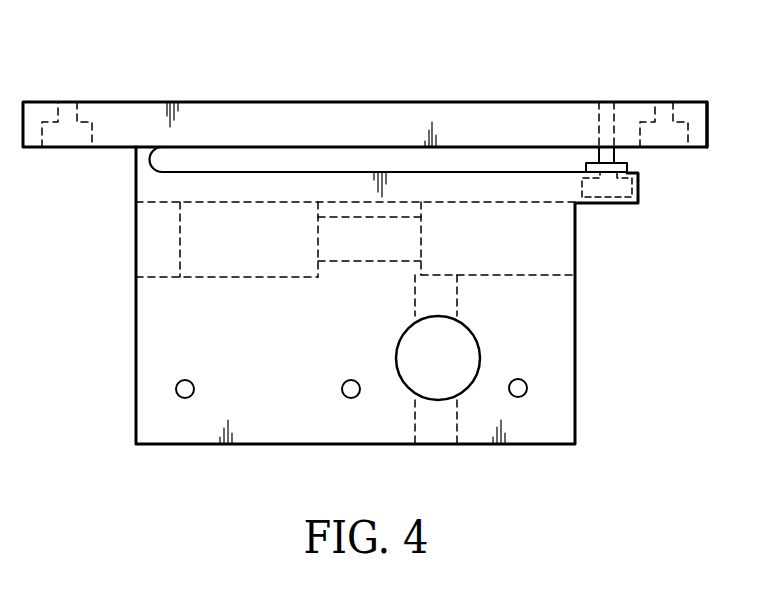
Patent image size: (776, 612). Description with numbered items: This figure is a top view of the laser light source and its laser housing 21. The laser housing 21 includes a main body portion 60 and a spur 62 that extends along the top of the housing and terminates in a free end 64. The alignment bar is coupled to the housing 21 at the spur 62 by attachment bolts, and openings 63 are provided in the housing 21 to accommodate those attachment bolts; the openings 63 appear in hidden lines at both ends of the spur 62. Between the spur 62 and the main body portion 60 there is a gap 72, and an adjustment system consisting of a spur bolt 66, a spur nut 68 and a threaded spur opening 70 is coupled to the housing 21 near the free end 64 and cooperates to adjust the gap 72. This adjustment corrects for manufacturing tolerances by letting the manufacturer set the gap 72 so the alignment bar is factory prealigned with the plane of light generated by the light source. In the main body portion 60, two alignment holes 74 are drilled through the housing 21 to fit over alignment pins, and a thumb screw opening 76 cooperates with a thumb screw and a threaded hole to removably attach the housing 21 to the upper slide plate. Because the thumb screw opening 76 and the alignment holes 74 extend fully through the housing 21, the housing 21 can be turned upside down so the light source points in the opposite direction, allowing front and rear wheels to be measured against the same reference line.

The laser housing 21 is at (393, 234).
The main body portion 60 is at (233, 330).
The spur 62 is at (357, 137).
The openings 63 is at (76, 108).
The free end 64 is at (702, 122).
The spur bolt 66 is at (620, 155).
The spur nut 68 is at (586, 170).
The threaded spur opening 70 is at (609, 108).
The gap 72 is at (666, 163).
The alignment holes 74 is at (193, 393).
The thumb screw opening 76 is at (349, 384).